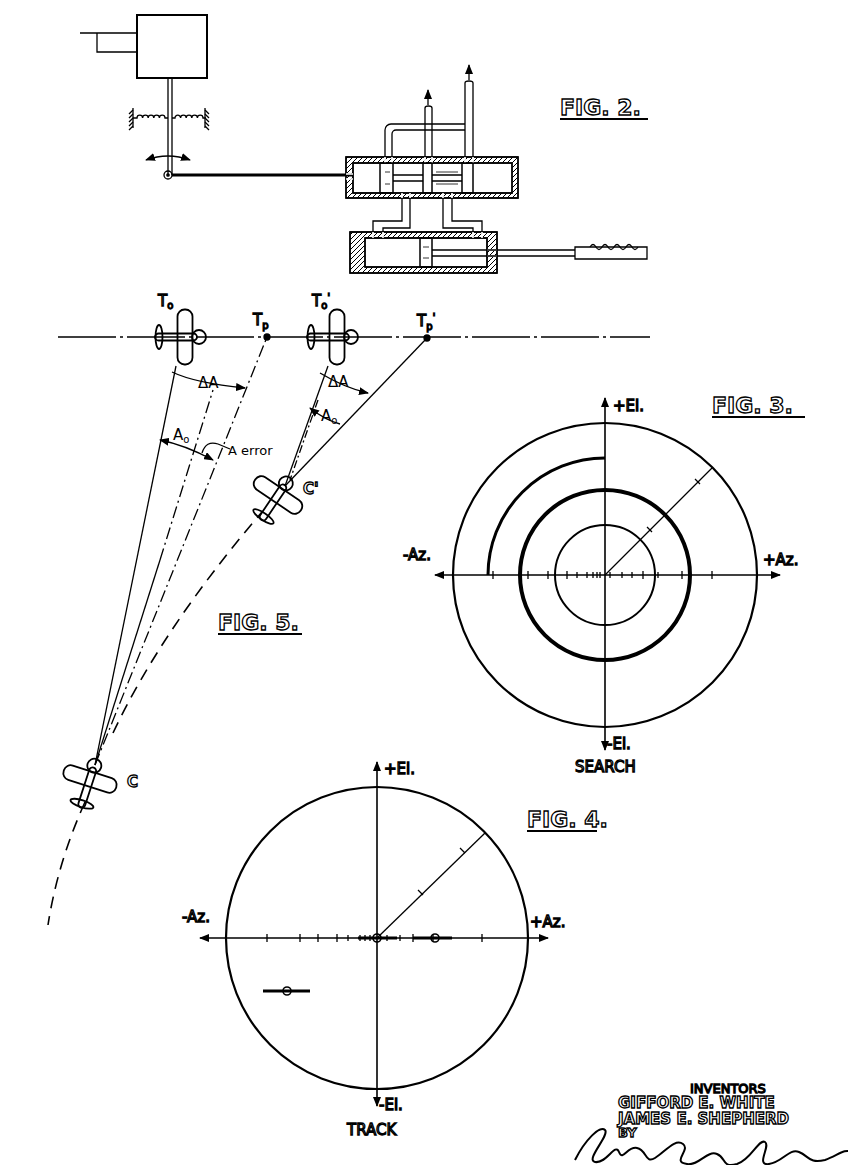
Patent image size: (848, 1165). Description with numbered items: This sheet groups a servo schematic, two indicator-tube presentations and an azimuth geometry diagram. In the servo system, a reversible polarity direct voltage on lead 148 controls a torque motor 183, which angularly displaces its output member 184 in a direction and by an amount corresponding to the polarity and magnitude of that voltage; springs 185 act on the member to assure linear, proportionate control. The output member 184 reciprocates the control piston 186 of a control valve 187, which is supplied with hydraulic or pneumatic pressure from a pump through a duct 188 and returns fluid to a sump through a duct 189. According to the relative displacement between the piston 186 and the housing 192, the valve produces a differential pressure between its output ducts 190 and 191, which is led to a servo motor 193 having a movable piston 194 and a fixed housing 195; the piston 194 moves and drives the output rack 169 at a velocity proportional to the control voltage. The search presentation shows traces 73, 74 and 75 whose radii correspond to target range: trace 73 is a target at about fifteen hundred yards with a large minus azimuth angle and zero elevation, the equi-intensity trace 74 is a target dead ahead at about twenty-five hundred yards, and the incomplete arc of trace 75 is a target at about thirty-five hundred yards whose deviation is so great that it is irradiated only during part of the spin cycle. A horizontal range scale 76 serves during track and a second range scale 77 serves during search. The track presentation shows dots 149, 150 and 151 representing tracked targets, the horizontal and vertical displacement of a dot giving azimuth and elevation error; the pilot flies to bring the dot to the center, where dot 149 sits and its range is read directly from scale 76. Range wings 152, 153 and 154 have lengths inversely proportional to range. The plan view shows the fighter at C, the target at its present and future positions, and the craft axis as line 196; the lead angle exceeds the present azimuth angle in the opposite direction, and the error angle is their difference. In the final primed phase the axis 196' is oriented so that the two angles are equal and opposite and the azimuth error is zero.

In FIG. 2, the lead 148 is at (93, 15).
In FIG. 2, the torque motor 183 is at (208, 35).
In FIG. 2, the output member 184 is at (172, 106).
In FIG. 2, the springs 185 is at (158, 134).
In FIG. 2, the control piston 186 is at (446, 169).
In FIG. 2, the control valve 187 is at (568, 184).
In FIG. 2, the duct 188 is at (473, 90).
In FIG. 2, the duct 189 is at (424, 112).
In FIG. 2, the output duct 190 is at (455, 212).
In FIG. 2, the output duct 191 is at (400, 212).
In FIG. 2, the housing 192 is at (490, 157).
In FIG. 2, the servo motor 193 is at (400, 266).
In FIG. 2, the piston 194 is at (446, 269).
In FIG. 2, the housing 195 is at (386, 273).
In FIG. 2, the output rack 169 is at (590, 259).
In FIG. 3, the trace 73 is at (620, 622).
In FIG. 3, the equi-intensity trace 74 is at (672, 627).
In FIG. 3, the trace 75 is at (522, 492).
In FIG. 3, the horizontal range scale 76 is at (698, 567).
In FIG. 4, the horizontal range scale 76 is at (283, 935).
In FIG. 3, the range scale 77 is at (690, 491).
In FIG. 4, the range scale 77 is at (430, 864).
In FIG. 4, the dot 149 is at (380, 943).
In FIG. 4, the dot 150 is at (438, 932).
In FIG. 4, the dot 151 is at (289, 986).
In FIG. 4, the range wing 152 is at (310, 996).
In FIG. 4, the range wing 153 is at (370, 933).
In FIG. 4, the range wing 154 is at (440, 943).
In FIG. 5, the axis of the fighter craft 196 is at (154, 577).
In FIG. 5, the axis of the fighter craft 196' is at (356, 412).